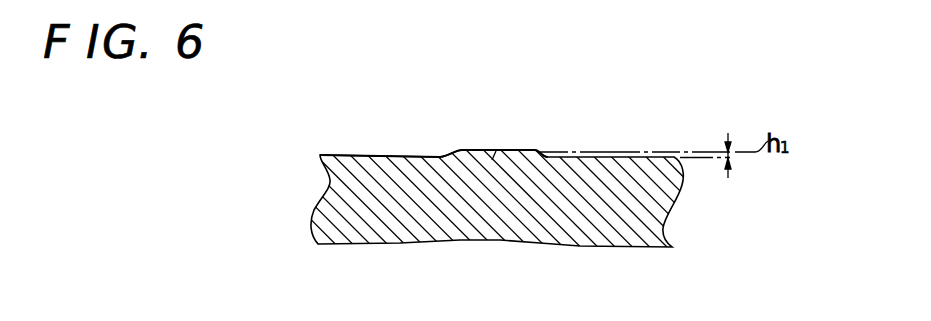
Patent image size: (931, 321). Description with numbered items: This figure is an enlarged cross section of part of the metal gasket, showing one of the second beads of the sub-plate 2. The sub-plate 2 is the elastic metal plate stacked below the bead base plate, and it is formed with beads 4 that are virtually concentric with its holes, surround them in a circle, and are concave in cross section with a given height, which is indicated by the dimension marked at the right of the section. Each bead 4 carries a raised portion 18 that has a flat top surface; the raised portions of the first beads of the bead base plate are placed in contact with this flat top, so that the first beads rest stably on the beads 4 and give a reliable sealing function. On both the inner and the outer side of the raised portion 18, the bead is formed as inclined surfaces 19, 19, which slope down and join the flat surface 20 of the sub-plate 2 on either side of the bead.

The sub-plate 2 is at (607, 248).
The flat surface 20 is at (375, 153).
The inclined surfaces 19 is at (456, 151).
The raised portion 18 is at (497, 150).
The second bead 4 is at (494, 153).